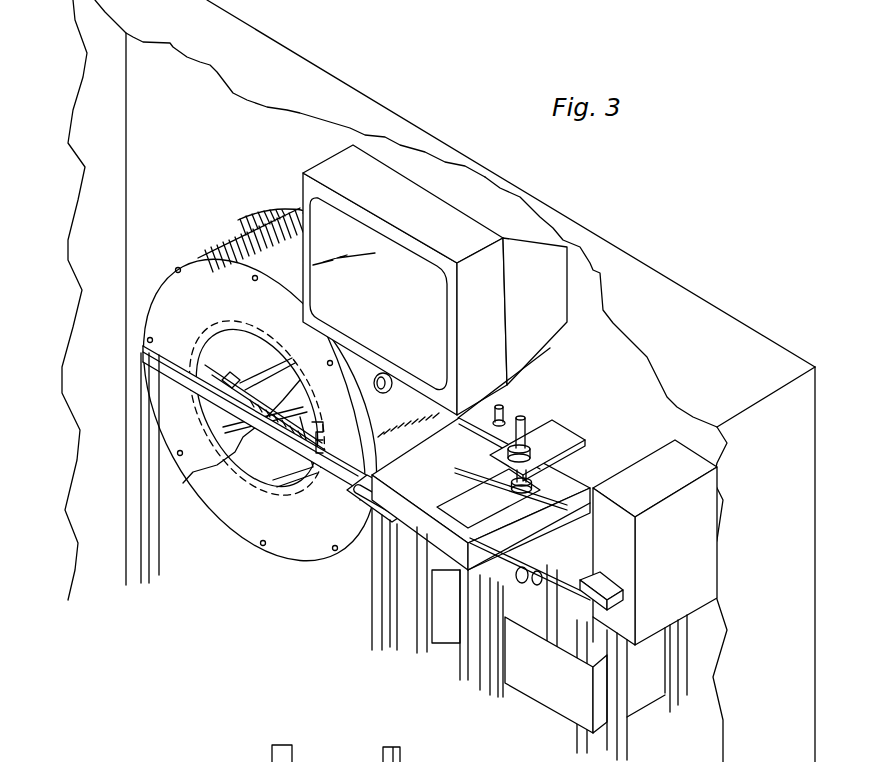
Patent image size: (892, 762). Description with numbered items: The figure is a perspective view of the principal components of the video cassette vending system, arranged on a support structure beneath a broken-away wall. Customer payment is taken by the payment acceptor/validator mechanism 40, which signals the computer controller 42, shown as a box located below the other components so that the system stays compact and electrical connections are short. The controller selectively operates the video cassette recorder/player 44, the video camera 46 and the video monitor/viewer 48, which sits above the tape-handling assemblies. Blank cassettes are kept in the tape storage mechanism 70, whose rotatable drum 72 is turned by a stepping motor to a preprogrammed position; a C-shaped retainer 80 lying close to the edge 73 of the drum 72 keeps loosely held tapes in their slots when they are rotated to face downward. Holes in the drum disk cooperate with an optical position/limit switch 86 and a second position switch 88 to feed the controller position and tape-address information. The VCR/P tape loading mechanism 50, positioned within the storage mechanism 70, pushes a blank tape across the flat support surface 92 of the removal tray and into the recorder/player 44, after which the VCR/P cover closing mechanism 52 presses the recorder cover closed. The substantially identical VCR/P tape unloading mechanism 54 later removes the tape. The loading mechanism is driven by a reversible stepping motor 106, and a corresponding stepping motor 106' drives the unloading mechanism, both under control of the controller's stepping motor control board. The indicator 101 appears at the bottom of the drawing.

The payment acceptor/validator mechanism 40 is at (699, 578).
The computer controller 42 is at (640, 707).
The video cassette recorder/player 44 is at (454, 555).
The video camera 46 is at (405, 409).
The video monitor/viewer 48 is at (441, 313).
The VCR/P tape loading mechanism 50 is at (260, 366).
The VCR/P cover closing mechanism 52 is at (542, 461).
The VCR/P tape unloading mechanism 54 is at (580, 552).
The tape storage mechanism 70 is at (202, 241).
The rotatable drum 72 is at (247, 500).
The edge of rotatable drum 73 is at (247, 535).
The C-shaped retainer 80 is at (273, 558).
The optical position/limit switch 86 is at (322, 427).
The second position switch 88 is at (322, 450).
The flat support surface 92 is at (454, 480).
The section indicator 101 is at (246, 761).
The reversible stepping motor 106 is at (231, 442).
The stepping motor 106' is at (556, 666).